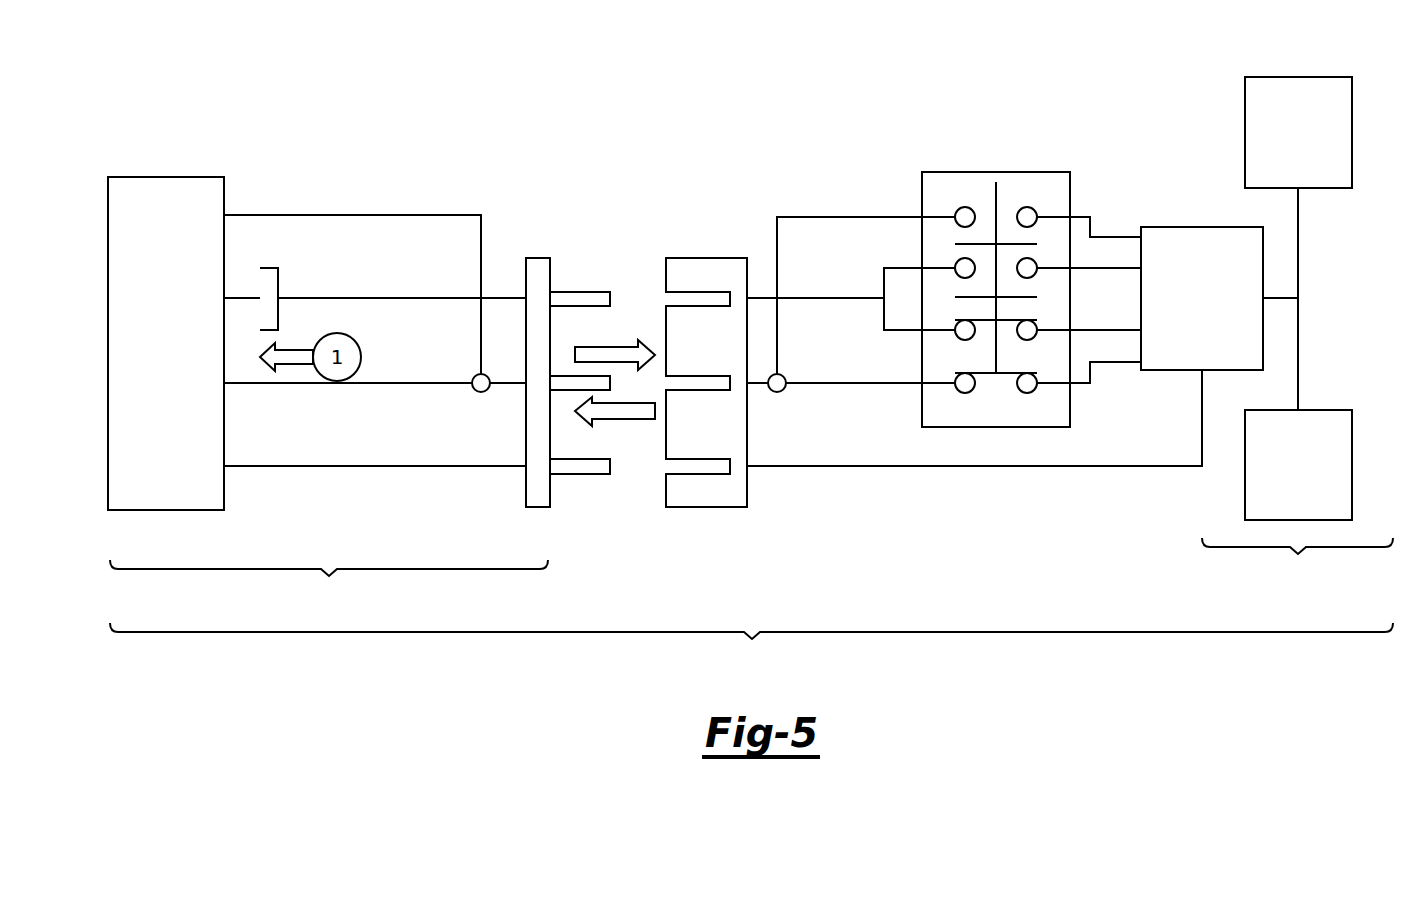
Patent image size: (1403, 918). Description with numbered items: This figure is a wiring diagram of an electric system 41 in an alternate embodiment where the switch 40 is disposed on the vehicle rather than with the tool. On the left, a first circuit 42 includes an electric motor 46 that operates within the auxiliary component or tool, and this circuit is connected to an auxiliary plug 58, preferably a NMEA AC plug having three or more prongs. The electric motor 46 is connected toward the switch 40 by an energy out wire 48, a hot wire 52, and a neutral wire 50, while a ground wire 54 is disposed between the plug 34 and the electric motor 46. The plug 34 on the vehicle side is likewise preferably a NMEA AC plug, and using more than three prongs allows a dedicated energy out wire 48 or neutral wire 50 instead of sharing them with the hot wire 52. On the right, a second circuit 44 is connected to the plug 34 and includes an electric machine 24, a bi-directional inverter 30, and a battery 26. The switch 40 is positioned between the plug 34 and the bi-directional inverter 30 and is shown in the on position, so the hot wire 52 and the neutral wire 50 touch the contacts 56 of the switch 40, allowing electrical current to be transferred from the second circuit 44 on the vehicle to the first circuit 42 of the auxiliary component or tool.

The electric machine 24 is at (1322, 410).
The battery 26 is at (1298, 77).
The bi-directional inverter 30 is at (1201, 227).
The plug 34 is at (706, 507).
The switch 40 is at (1005, 274).
The electric system 41 is at (751, 647).
The first circuit 42 is at (329, 585).
The second circuit 44 is at (1297, 562).
The electric motor 46 is at (165, 177).
The energy out wire 48 is at (410, 214).
The neutral wire 50 is at (340, 297).
The hot wire 52 is at (416, 379).
The ground wire 54 is at (346, 464).
The contacts 56 is at (965, 207).
The auxiliary plug 58 is at (538, 258).